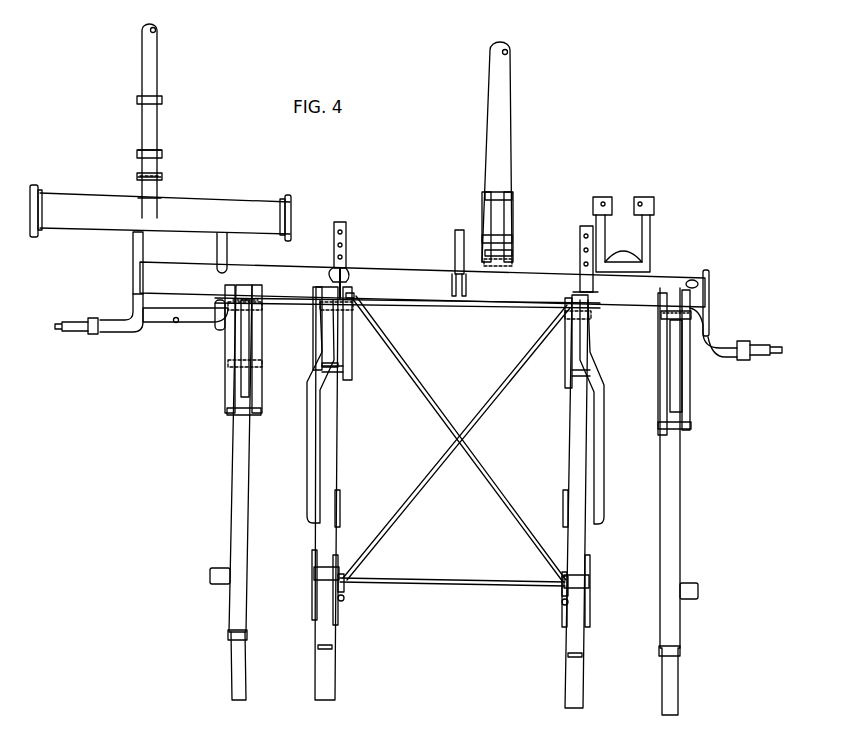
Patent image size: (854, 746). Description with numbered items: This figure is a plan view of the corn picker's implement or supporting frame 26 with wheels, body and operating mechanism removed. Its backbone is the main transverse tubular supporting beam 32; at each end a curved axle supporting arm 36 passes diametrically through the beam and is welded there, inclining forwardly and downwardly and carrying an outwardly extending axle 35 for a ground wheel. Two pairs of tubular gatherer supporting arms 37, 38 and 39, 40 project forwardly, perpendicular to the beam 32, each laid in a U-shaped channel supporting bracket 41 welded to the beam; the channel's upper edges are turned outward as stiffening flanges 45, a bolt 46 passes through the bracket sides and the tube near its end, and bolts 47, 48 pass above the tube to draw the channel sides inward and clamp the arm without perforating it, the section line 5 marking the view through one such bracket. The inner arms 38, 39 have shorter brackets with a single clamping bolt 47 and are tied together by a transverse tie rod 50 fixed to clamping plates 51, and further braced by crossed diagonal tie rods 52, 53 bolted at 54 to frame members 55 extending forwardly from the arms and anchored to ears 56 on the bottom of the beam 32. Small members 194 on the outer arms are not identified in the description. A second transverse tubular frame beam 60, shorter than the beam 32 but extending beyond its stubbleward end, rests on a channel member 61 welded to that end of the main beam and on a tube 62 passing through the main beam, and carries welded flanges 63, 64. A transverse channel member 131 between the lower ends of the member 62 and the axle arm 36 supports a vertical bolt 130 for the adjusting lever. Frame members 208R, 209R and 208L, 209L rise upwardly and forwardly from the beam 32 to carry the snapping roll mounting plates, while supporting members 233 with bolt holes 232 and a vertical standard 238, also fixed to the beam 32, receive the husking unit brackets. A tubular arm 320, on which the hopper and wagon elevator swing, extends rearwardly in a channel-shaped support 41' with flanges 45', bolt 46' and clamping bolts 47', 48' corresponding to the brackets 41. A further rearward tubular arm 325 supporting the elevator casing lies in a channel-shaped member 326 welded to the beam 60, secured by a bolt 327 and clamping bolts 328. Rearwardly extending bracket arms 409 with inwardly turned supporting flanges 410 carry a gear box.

The implement or supporting frame 26 is at (722, 270).
The main transverse tubular supporting beam 32 is at (419, 304).
The axle 35 is at (80, 335).
The curved axle supporting arm 36 is at (118, 333).
The gatherer supporting arm 37 is at (232, 617).
The gatherer supporting arm 38 is at (338, 459).
The gatherer supporting arm 39 is at (572, 459).
The gatherer supporting arm 40 is at (675, 645).
The supporting bracket 41 is at (452, 360).
The longitudinally extending flanges 45 is at (628, 324).
The bolt 46 is at (290, 313).
The clamping bolt 47 is at (393, 371).
The clamping bolt 48 is at (452, 410).
The transverse tie rod 50 is at (440, 587).
The clamping plates 51 is at (340, 613).
The diagonal tie rod 52 is at (408, 491).
The diagonal tie rod 53 is at (500, 501).
The bolt connection 54 is at (348, 595).
The frame members 55 is at (334, 646).
The ears 56 is at (355, 299).
The second transverse tubular frame beam 60 is at (193, 206).
The outer support 61 is at (143, 250).
The support member 62 is at (218, 248).
The flange 63 is at (40, 188).
The flange 64 is at (287, 196).
The vertical bolt 130 is at (176, 323).
The transverse channel member 131 is at (152, 324).
The stop block 194 is at (214, 579).
The frame member 208R is at (323, 353).
The frame member 208L is at (590, 357).
The frame member 209R is at (319, 367).
The frame member 209L is at (670, 386).
The bolt holes 232 is at (348, 241).
The supporting members 233 is at (344, 222).
The vertical standard 238 is at (459, 230).
The tubular arm 320 is at (506, 69).
The tubular arm 325 is at (158, 39).
The channel-shaped member 326 is at (158, 129).
The bolt 327 is at (162, 177).
The clamping bolts 328 is at (142, 150).
The bracket arms 409 is at (649, 237).
The supporting flanges 410 is at (640, 198).
The channel-shaped support 41' is at (521, 227).
The flanges 45' is at (516, 242).
The bolt 46' is at (517, 263).
The clamping bolt 47' is at (512, 213).
The clamping bolt 48' is at (512, 174).
The section line 5 is at (220, 431).